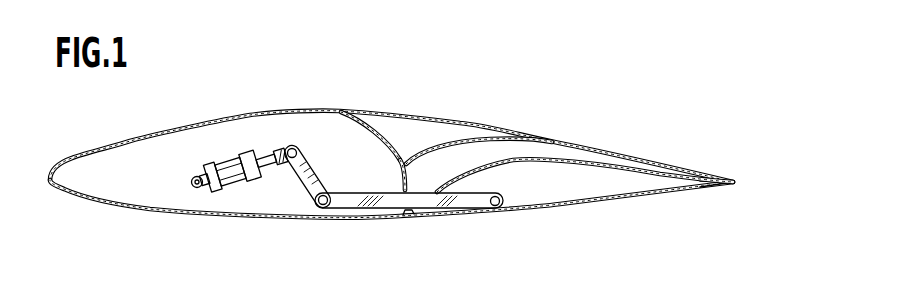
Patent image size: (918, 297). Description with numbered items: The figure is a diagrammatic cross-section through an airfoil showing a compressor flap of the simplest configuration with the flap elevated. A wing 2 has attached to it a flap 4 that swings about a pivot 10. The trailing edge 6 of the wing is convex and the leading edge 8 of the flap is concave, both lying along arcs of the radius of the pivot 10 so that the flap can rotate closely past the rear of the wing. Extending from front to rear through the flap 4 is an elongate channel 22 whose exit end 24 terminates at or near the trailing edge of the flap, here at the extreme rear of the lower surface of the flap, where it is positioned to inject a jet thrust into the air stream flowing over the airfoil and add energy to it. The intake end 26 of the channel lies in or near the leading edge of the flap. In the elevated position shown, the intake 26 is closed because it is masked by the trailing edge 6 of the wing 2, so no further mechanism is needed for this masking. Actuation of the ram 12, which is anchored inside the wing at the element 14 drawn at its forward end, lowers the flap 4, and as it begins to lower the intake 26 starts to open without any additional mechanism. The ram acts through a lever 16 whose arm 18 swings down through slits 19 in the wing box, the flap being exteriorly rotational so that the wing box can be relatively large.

The wing 2 is at (287, 110).
The flap 4 is at (433, 130).
The trailing edge of the wing 6 is at (402, 164).
The leading edge of flap 8 is at (394, 146).
The pivot 10 is at (317, 199).
The ram 12 is at (224, 161).
The actuator pivot eye 14 is at (191, 178).
The lever 16 is at (313, 177).
The arm 18 is at (385, 198).
The slits 19 is at (358, 218).
The elongate channel 22 is at (613, 160).
The exit end 24 is at (718, 188).
The intake end 26 is at (417, 180).